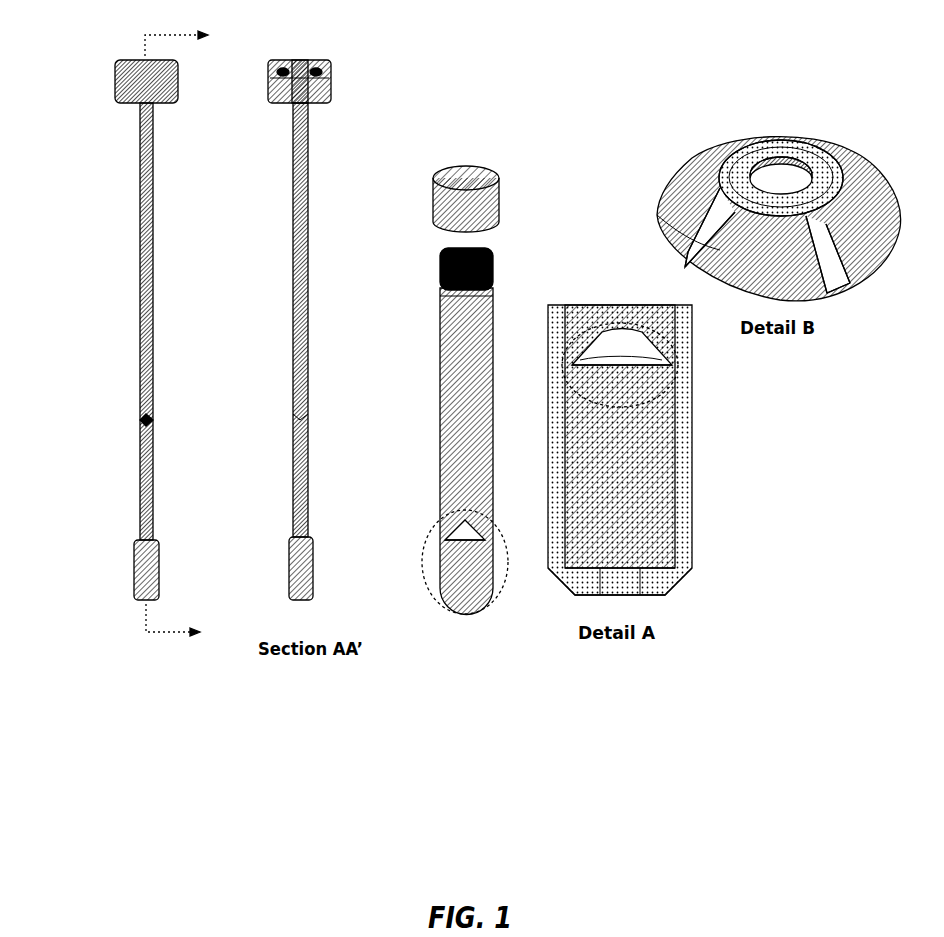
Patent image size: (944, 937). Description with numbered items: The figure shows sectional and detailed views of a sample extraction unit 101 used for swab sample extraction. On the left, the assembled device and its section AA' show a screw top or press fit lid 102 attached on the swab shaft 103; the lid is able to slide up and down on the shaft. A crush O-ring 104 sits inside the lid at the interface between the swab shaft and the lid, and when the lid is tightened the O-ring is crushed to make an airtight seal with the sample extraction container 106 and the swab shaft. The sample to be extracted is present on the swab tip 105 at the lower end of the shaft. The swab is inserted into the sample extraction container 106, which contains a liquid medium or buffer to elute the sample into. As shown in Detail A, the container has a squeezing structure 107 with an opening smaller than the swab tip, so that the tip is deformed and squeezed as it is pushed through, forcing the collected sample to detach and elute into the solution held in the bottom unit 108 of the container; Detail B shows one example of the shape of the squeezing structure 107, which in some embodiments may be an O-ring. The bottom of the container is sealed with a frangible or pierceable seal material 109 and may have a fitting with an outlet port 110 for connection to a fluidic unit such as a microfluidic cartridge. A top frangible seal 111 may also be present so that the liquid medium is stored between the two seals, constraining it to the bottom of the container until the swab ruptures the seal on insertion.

The sample extraction unit 101 is at (128, 330).
The lid 102 is at (331, 70).
The swab shaft 103 is at (310, 250).
The crush O-ring 104 is at (313, 103).
The swab tip 105 is at (310, 565).
The sample extraction container 106 is at (307, 420).
The squeezing structure 107 is at (628, 348).
The bottom unit 108 is at (437, 583).
The frangible or pierceable seal material 109 is at (625, 568).
The outlet port 110 is at (630, 580).
The top frangible seal 111 is at (670, 372).